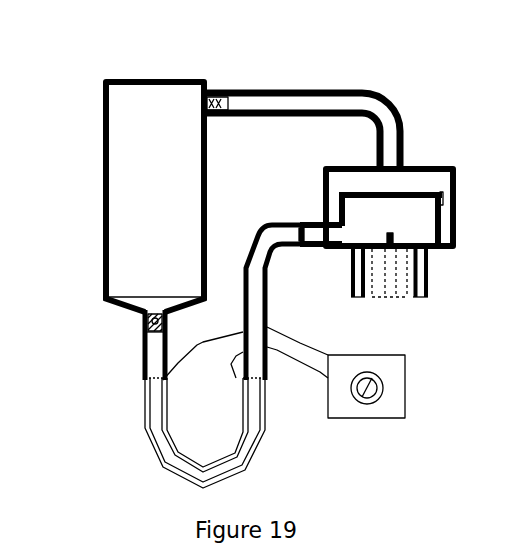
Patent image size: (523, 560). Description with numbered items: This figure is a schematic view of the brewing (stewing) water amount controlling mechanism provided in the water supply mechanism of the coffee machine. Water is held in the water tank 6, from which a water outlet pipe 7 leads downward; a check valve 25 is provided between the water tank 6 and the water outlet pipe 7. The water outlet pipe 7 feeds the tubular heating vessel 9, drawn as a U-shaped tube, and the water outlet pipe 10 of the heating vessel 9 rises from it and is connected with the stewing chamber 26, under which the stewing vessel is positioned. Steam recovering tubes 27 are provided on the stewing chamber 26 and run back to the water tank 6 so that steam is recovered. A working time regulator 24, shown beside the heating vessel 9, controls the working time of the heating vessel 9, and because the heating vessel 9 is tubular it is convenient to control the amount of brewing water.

The water tank 6 is at (132, 105).
The water outlet pipe 7 is at (155, 367).
The heating vessel 9 is at (153, 443).
The water outlet pipe of the heating vessel 10 is at (280, 233).
The working time regulator 24 is at (368, 400).
The check valve 25 is at (147, 313).
The stewing chamber 26 is at (413, 222).
The steam recovering tubes 27 is at (312, 92).